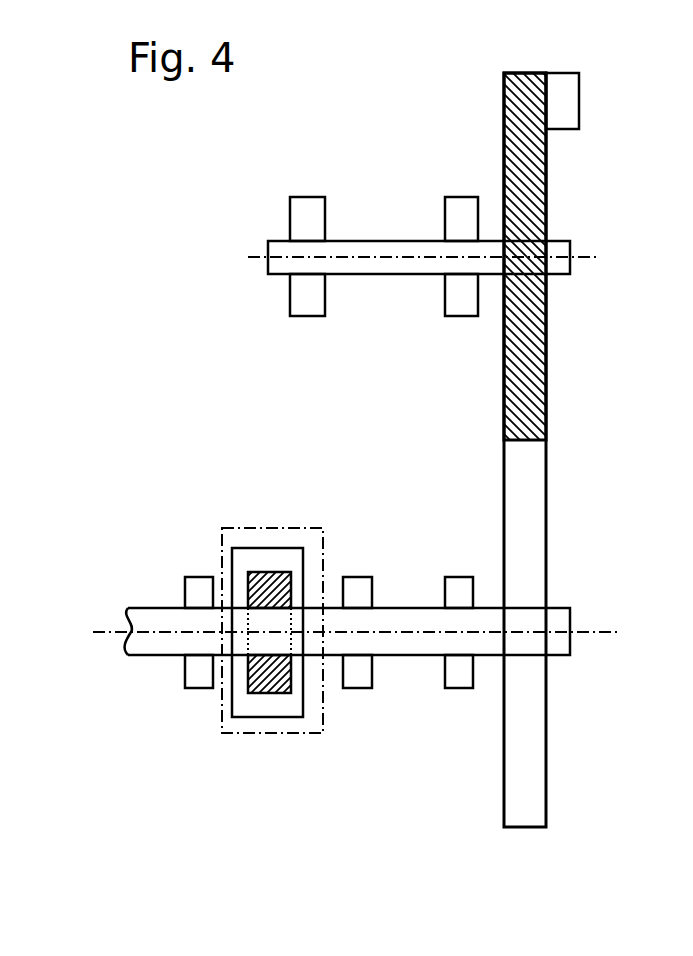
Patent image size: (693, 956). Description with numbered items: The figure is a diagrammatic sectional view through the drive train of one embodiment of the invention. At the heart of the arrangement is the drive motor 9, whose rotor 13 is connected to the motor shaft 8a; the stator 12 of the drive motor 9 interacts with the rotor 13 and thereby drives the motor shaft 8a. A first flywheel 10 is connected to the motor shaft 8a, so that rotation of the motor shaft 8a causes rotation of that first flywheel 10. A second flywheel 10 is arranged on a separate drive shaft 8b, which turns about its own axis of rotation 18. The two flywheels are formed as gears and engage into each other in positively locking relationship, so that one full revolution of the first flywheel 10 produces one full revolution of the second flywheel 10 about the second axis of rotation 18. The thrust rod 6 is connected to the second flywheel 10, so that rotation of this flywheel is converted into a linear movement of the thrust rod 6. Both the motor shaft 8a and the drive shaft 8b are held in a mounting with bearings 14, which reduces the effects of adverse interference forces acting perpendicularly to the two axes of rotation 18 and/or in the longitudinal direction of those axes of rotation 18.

The thrust rod 6 is at (565, 102).
The motor shaft 8a is at (160, 620).
The drive shaft 8b is at (403, 260).
The drive motor 9 is at (217, 733).
The flywheel 10 is at (537, 518).
The stator 12 is at (263, 702).
The rotor 13 is at (285, 682).
The bearings 14 is at (457, 210).
The axis of rotation 18 is at (240, 258).